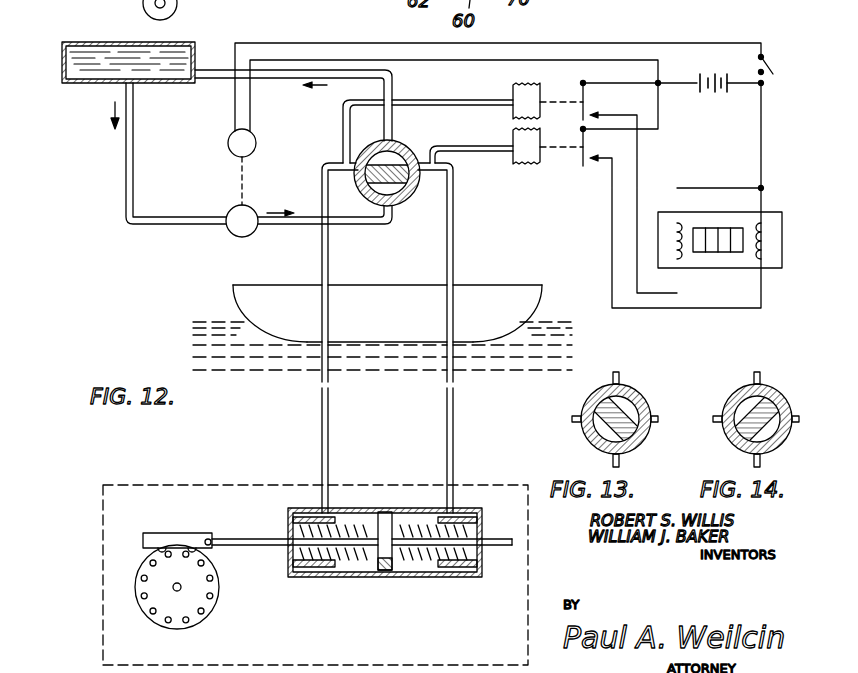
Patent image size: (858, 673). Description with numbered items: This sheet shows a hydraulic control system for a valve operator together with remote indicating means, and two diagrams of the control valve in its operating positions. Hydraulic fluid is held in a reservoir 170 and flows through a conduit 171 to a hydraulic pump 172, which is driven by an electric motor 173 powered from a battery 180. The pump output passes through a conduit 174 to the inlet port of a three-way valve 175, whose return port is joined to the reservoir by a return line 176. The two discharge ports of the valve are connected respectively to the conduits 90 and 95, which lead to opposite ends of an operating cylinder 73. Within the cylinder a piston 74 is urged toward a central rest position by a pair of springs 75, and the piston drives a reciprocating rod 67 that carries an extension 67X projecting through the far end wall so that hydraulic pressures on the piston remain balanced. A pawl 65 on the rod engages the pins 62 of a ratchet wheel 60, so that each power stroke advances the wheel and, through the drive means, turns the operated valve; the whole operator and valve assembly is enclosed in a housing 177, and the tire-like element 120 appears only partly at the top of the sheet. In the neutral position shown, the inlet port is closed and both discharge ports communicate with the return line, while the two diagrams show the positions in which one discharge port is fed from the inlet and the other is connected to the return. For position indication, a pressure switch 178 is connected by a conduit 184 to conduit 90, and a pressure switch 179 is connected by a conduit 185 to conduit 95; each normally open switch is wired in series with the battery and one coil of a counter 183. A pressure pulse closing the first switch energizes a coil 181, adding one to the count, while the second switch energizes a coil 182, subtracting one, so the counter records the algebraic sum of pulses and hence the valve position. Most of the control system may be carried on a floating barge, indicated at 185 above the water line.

In FIG. 12, the ratchet wheel 60 is at (158, 619).
In FIG. 12, the pins 62 is at (206, 611).
In FIG. 12, the pawl 65 is at (159, 535).
In FIG. 12, the reciprocating rod 67 is at (262, 538).
In FIG. 12, the extension 67X is at (503, 549).
In FIG. 12, the cylinder 73 is at (348, 579).
In FIG. 12, the piston 74 is at (386, 576).
In FIG. 12, the springs 75 is at (422, 578).
In FIG. 12, the conduit 90 is at (322, 185).
In FIG. 13, the conduit 90 is at (574, 419).
In FIG. 14, the conduit 90 is at (715, 419).
In FIG. 12, the conduit 95 is at (455, 240).
In FIG. 13, the conduit 95 is at (656, 412).
In FIG. 14, the conduit 95 is at (797, 412).
In FIG. 12, the wheel 120 is at (174, 10).
In FIG. 12, the reservoir 170 is at (121, 40).
In FIG. 12, the conduit 171 is at (176, 226).
In FIG. 12, the hydraulic pump 172 is at (238, 238).
In FIG. 12, the electric motor 173 is at (256, 143).
In FIG. 12, the conduit 174 is at (374, 226).
In FIG. 14, the conduit 174 is at (761, 463).
In FIG. 12, the three-way valve 175 is at (421, 195).
In FIG. 13, the three-way valve 175 is at (594, 403).
In FIG. 14, the three-way valve 175 is at (740, 392).
In FIG. 12, the return line 176 is at (297, 77).
In FIG. 13, the return line 176 is at (617, 374).
In FIG. 14, the return line 176 is at (758, 374).
In FIG. 12, the housing 177 is at (186, 483).
In FIG. 12, the pressure operated switch 178 is at (559, 96).
In FIG. 12, the pressure operated switch 179 is at (562, 151).
In FIG. 12, the battery 180 is at (714, 94).
In FIG. 12, the coil 181 is at (674, 225).
In FIG. 12, the coil 182 is at (767, 235).
In FIG. 12, the counter 183 is at (718, 216).
In FIG. 12, the conduit 184 is at (420, 98).
In FIG. 12, the conduit / floating barge 185 is at (496, 153).